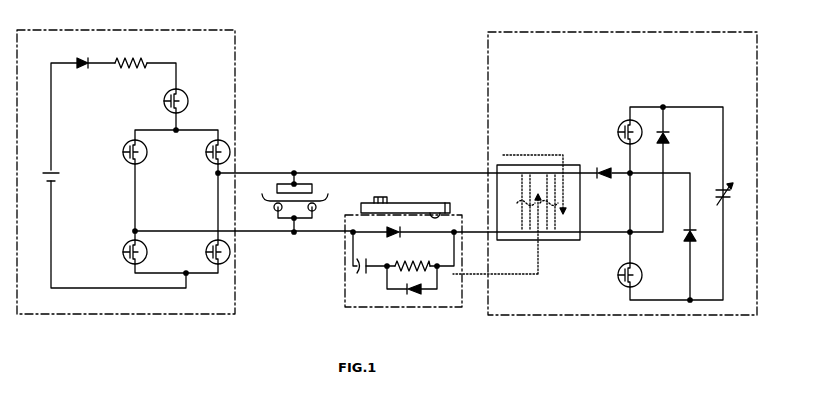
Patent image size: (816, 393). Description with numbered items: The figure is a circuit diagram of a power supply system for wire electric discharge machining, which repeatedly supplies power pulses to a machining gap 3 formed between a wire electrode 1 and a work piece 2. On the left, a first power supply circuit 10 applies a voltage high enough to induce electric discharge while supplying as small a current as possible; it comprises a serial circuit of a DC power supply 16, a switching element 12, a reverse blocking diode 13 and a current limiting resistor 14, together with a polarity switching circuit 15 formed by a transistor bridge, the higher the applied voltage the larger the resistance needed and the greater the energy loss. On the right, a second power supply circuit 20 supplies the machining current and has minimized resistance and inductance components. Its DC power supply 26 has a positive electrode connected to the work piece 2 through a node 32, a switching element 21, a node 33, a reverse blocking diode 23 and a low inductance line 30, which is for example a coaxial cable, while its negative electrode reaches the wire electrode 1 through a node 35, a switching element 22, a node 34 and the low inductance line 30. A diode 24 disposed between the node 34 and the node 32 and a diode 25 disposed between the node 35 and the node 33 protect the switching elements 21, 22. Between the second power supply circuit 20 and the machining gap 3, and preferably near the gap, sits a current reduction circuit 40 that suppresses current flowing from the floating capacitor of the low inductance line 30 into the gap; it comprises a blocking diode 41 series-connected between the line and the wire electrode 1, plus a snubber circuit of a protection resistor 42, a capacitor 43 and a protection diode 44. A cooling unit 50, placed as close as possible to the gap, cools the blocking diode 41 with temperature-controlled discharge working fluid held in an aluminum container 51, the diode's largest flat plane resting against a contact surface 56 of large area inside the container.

The wire electrode 1 is at (294, 202).
The work piece 2 is at (278, 188).
The machining gap 3 is at (325, 196).
The first power supply circuit 10 is at (124, 30).
The switching element 12 is at (187, 101).
The reverse blocking diode 13 is at (85, 57).
The current limiting resistor 14 is at (135, 57).
The polarity switching circuit 15 is at (125, 188).
The DC power supply 16 is at (43, 174).
The second power supply circuit 20 is at (628, 32).
The switching element 21 is at (618, 129).
The switching element 22 is at (618, 284).
The reverse blocking diode 23 is at (608, 183).
The diode 24 is at (671, 137).
The diode 25 is at (693, 238).
The DC power supply 26 is at (729, 206).
The low inductance line 30 is at (573, 165).
The node 32 is at (662, 105).
The node 33 is at (632, 176).
The node 34 is at (631, 237).
The node 35 is at (688, 299).
The current reduction circuit 40 is at (461, 214).
The blocking diode 41 is at (403, 232).
The protection resistor 42 is at (412, 261).
The capacitor 43 is at (368, 262).
The protection diode 44 is at (426, 290).
The cooling unit 50 is at (409, 203).
The container 51 is at (373, 198).
The contact surface 56 is at (441, 214).